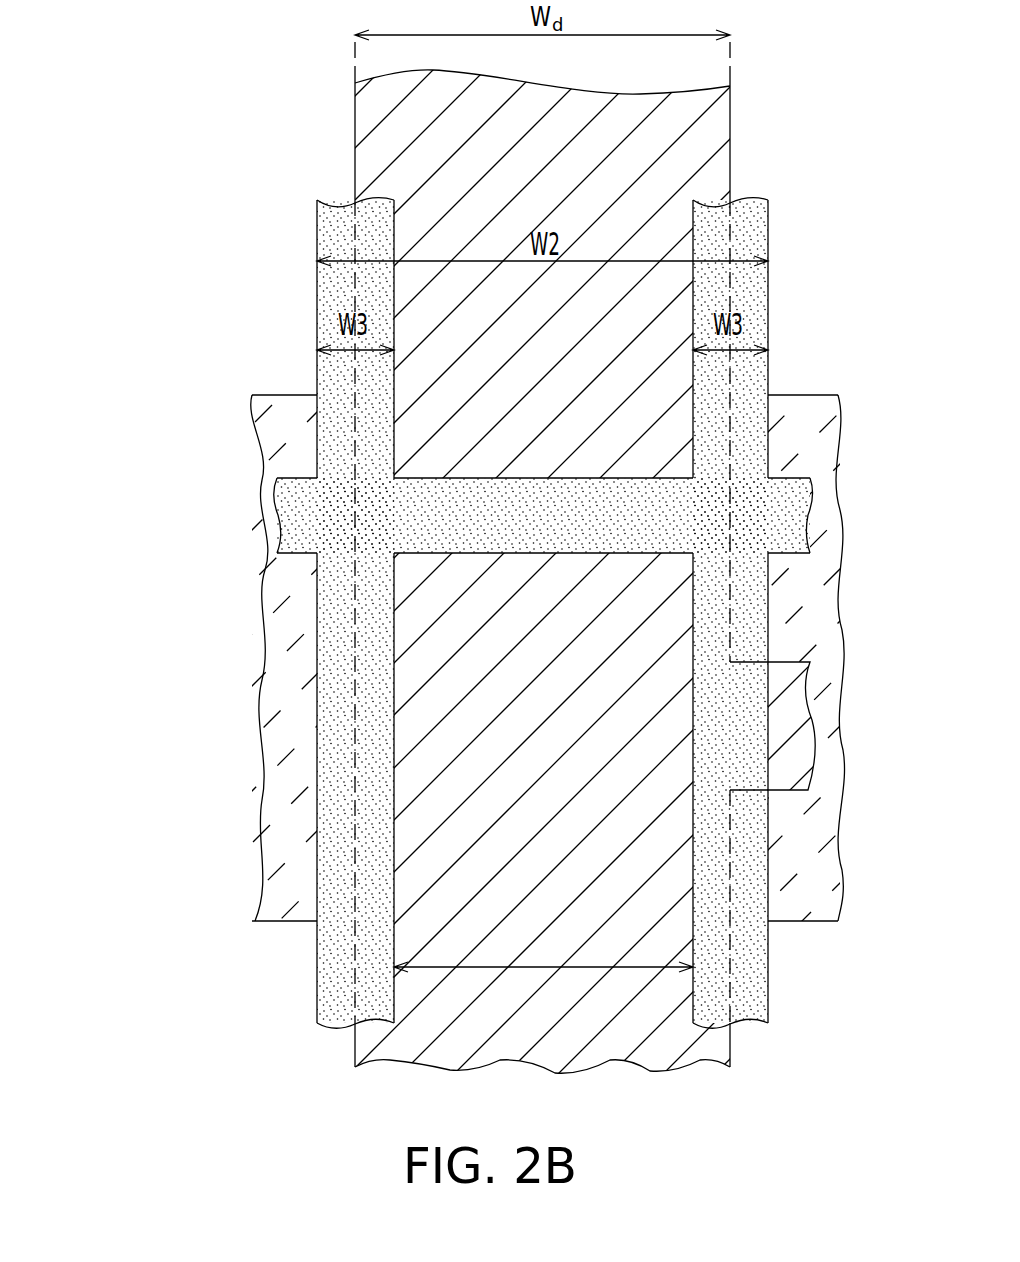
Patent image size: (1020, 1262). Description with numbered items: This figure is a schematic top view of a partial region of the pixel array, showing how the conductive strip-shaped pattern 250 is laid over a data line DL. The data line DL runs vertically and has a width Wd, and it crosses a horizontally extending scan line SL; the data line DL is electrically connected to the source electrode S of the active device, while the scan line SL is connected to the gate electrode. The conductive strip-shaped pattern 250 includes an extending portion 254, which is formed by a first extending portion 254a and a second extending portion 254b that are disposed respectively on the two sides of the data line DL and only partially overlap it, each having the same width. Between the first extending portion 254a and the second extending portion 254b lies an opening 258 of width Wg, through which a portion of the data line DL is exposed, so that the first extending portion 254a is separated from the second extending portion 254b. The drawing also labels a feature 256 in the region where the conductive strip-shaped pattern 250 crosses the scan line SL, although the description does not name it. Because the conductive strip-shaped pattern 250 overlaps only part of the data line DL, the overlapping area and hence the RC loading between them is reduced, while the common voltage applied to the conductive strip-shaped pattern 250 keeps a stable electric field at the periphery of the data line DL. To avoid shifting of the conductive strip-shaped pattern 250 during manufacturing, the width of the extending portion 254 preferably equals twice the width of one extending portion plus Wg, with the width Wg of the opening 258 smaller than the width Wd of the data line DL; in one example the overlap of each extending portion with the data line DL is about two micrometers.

The conductive strip-shaped pattern 250 is at (428, 613).
The extending portion 254 is at (434, 613).
The first extending portion 254a is at (337, 679).
The second extending portion 254b is at (720, 765).
The gate electrode 256 is at (290, 513).
The opening 258 is at (645, 878).
The data line DL is at (713, 135).
The scan line SL is at (288, 847).
The source electrode S is at (807, 708).